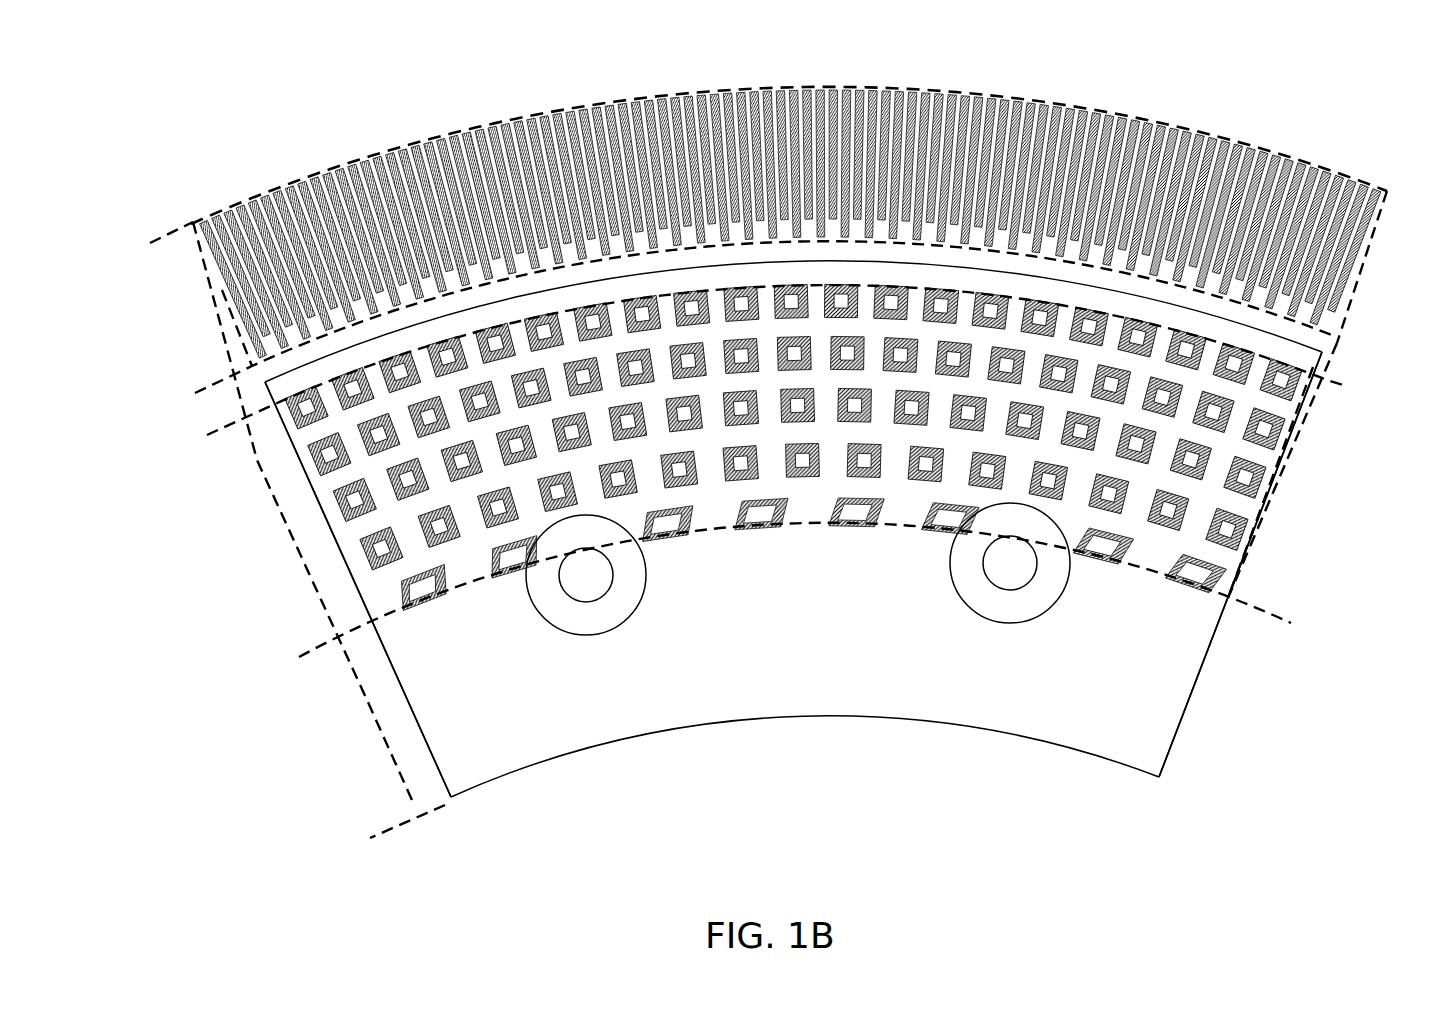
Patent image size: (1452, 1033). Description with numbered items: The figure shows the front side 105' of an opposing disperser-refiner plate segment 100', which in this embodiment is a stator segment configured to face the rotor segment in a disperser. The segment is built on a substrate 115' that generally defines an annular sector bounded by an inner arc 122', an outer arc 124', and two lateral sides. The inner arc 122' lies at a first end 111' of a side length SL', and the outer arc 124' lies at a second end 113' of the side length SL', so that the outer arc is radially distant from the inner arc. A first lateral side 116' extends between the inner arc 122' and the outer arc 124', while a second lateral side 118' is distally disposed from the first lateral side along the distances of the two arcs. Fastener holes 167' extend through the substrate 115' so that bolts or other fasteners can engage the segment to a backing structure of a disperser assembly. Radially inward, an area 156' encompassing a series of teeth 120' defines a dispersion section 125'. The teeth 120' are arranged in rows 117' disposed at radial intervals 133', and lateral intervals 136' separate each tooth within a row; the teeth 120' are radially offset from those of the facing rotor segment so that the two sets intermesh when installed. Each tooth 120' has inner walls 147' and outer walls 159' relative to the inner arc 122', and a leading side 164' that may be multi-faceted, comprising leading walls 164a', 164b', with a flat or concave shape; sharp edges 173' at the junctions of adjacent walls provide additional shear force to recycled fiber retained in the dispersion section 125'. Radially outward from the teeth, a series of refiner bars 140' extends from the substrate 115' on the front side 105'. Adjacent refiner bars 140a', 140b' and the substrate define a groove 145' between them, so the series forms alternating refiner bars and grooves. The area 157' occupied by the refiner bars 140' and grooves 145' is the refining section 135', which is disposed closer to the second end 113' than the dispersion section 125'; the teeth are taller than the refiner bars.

The opposing disperser-refiner plate segment 100' is at (737, 424).
The front side 105' is at (754, 384).
The first end 111' is at (400, 840).
The second end 113' is at (151, 236).
The substrate 115' is at (1240, 564).
The first lateral side 116' is at (381, 674).
The rows 117' is at (1296, 477).
The second lateral side 118' is at (1295, 482).
The teeth 120' is at (793, 417).
The inner arc 122' is at (805, 765).
The outer arc 124' is at (789, 132).
The dispersion section 125' is at (821, 451).
The radial intervals 133' is at (786, 410).
The refining section 135' is at (778, 292).
The lateral intervals 136' is at (704, 423).
The refiner bars 140' is at (790, 195).
The first refiner bar 140a' is at (468, 168).
The second refiner bar 140b' is at (539, 164).
The groove 145' is at (689, 142).
The inner walls 147' is at (1163, 522).
The area encompassing the teeth 156' is at (270, 467).
The area of refiner bars and grooves 157' is at (245, 511).
The outer walls 159' is at (855, 536).
The leading side 164' is at (483, 523).
The first leading wall 164a' is at (411, 603).
The second leading wall 164b' is at (336, 583).
The fastener holes 167' is at (798, 592).
The sharp edges 173' is at (611, 415).
The side length SL' is at (760, 605).